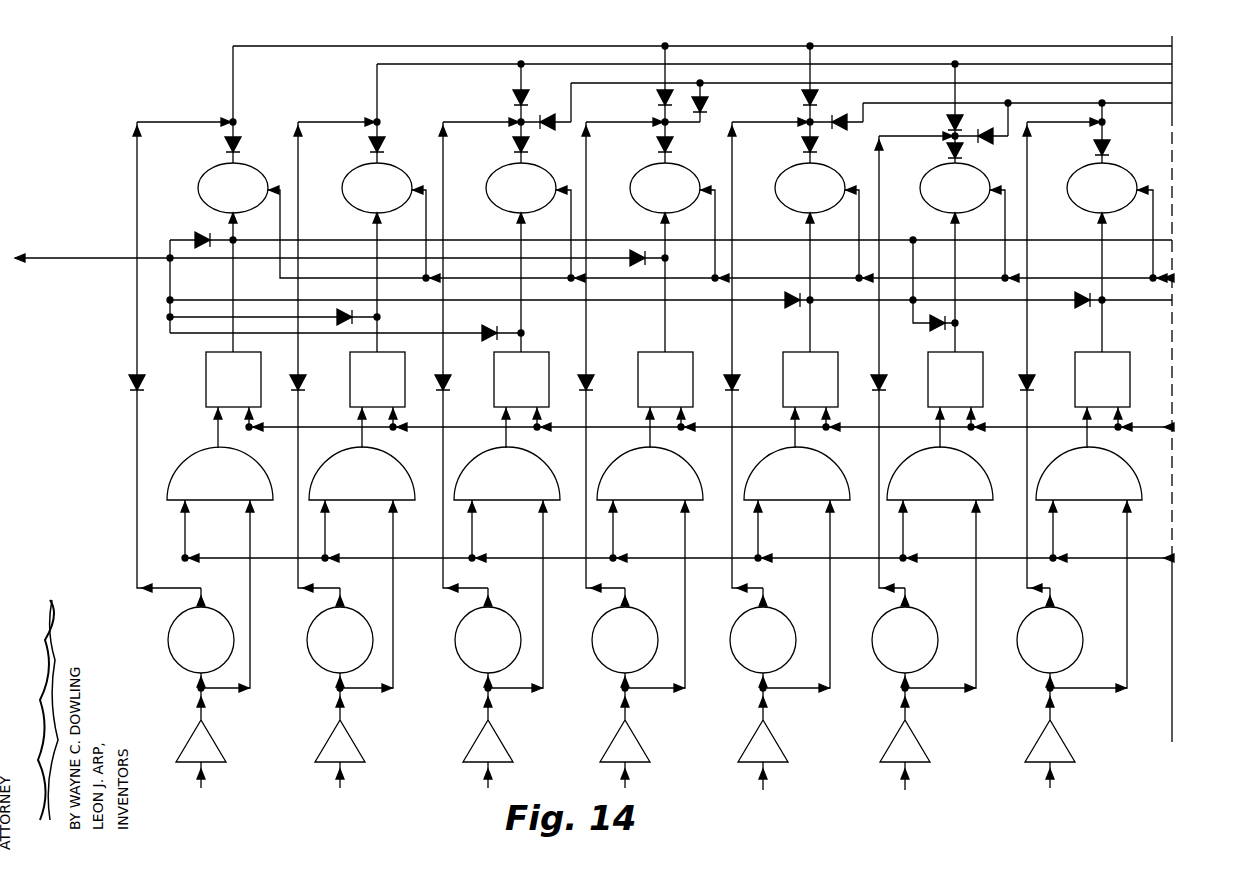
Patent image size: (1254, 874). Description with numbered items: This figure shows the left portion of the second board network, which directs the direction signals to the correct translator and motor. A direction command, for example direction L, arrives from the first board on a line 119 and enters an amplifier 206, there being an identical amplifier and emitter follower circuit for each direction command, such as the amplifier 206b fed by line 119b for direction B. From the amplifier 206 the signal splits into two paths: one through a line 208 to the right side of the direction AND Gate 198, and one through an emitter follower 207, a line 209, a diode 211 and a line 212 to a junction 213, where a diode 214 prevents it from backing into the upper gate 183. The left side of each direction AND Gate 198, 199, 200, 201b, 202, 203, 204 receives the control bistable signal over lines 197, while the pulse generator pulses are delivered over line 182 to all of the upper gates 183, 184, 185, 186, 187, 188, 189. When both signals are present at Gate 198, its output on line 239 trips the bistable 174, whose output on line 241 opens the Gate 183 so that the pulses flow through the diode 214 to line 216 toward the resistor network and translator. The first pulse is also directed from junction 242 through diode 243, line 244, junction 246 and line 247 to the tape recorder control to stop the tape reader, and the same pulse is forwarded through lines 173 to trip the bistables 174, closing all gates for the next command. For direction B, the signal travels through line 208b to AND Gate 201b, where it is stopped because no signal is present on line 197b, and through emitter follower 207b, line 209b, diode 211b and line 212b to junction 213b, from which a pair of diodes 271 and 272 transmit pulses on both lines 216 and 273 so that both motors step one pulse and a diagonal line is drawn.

The line 216 is at (231, 50).
The junction 213 is at (231, 120).
The junction 213b is at (662, 120).
The diode 214 is at (240, 140).
The gate 183 is at (207, 174).
The gate 184 is at (360, 172).
The gate 185 is at (500, 174).
The gate 186 is at (648, 172).
The gate 187 is at (793, 172).
The gate 188 is at (937, 174).
The gate 189 is at (1083, 172).
The line 182 is at (280, 220).
The line 273 is at (768, 83).
The diode 271 is at (656, 97).
The diode 272 is at (712, 104).
The diode 243 is at (195, 236).
The junction 242 is at (231, 238).
The line 244 is at (168, 246).
The line 247 is at (50, 262).
The junction 246 is at (168, 262).
The line 241 is at (231, 340).
The line 212 is at (135, 328).
The line 212b is at (588, 330).
The diode 211 is at (129, 385).
The diode 211b is at (588, 372).
The line 209 is at (135, 490).
The line 209b is at (586, 545).
The bistable 174 is at (206, 370).
The line 239 is at (216, 424).
The lines 173 is at (252, 422).
The AND Gate 198 is at (196, 455).
The AND Gate 199 is at (345, 455).
The AND Gate 200 is at (491, 455).
The AND Gate 201b is at (633, 455).
The AND Gate 202 is at (781, 455).
The AND Gate 203 is at (926, 455).
The AND Gate 204 is at (1071, 455).
The lines 197 is at (183, 530).
The line 197b is at (614, 542).
The line 208 is at (248, 538).
The line 208b is at (647, 690).
The emitter follower 207 is at (208, 601).
The emitter follower 207b is at (632, 601).
The amplifier 206 is at (216, 745).
The amplifier 206b is at (640, 745).
The line 119 is at (199, 780).
The line 119b is at (627, 788).